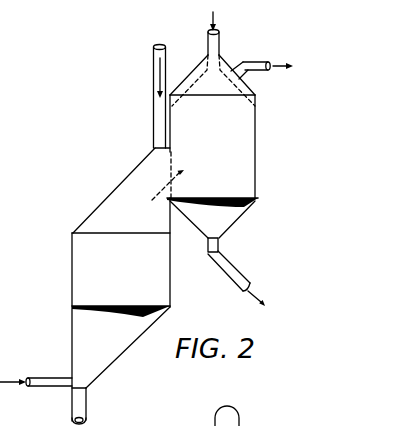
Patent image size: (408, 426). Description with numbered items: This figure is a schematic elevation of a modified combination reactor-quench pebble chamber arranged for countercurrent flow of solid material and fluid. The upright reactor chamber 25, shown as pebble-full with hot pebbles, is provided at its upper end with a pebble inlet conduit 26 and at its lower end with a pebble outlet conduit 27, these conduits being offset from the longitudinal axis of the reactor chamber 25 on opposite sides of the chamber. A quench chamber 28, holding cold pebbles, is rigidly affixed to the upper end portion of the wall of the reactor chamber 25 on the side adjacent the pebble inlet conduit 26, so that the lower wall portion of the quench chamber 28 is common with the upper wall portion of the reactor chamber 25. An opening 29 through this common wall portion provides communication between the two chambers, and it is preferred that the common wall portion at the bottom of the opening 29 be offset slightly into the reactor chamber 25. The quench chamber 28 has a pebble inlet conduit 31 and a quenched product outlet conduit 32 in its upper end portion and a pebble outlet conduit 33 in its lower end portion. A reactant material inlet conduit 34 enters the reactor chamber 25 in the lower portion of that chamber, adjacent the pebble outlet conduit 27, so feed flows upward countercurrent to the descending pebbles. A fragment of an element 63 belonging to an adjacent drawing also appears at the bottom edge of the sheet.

The upright reactor chamber 25 is at (111, 195).
The pebble inlet conduit 26 is at (153, 96).
The pebble outlet conduit 27 is at (88, 393).
The quench chamber 28 is at (258, 118).
The opening 29 is at (173, 194).
The pebble inlet conduit 31 is at (219, 47).
The quenched product outlet conduit 32 is at (247, 62).
The pebble outlet conduit 33 is at (219, 246).
The reactant material inlet conduit 34 is at (50, 383).
The element of adjacent figure 63 is at (211, 416).